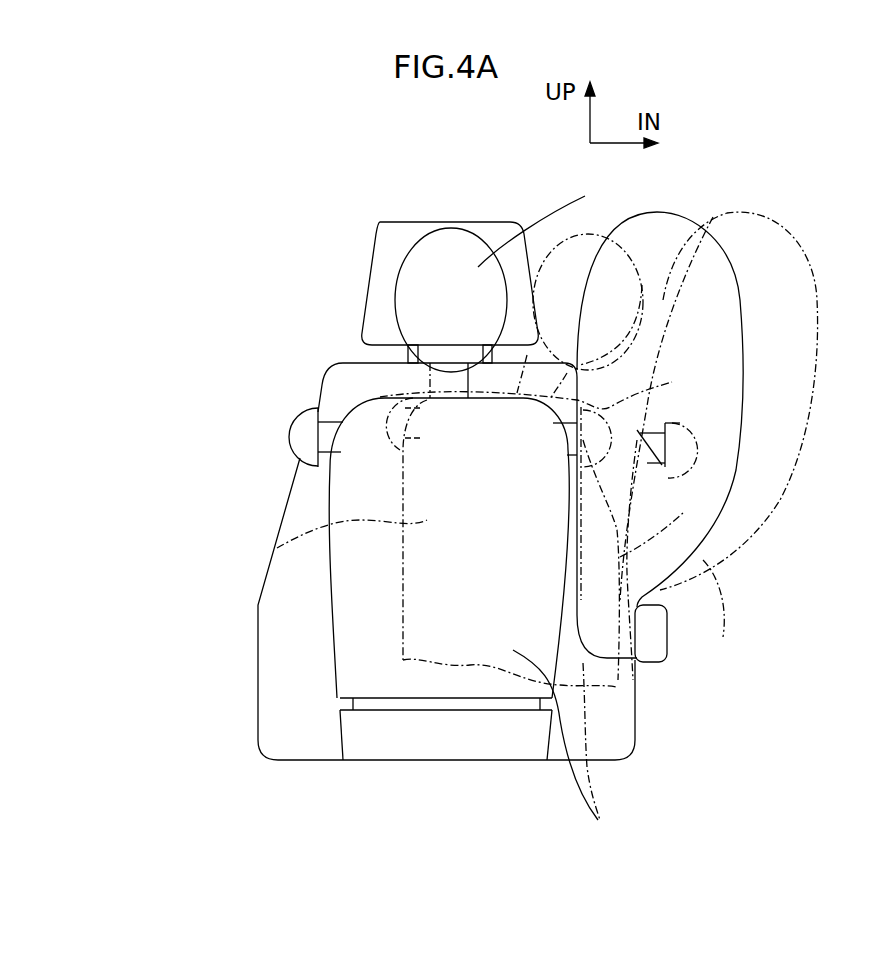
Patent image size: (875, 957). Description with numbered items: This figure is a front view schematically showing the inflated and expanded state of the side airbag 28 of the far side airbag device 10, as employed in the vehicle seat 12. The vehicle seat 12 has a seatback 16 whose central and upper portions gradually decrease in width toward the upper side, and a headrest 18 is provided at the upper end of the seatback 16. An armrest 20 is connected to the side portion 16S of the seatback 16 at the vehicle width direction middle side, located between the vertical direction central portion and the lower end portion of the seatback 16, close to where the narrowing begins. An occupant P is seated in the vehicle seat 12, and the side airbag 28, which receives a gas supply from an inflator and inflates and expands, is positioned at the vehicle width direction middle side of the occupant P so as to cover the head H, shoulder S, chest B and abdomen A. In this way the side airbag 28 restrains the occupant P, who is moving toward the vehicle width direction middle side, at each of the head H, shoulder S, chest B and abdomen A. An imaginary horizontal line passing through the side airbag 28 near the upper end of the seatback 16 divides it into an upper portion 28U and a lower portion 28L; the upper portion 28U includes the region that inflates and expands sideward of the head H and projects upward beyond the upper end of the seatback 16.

The far side airbag device 10 is at (743, 193).
The vehicle seat 12 is at (287, 322).
The seatback 16 is at (300, 748).
The side portion 16S is at (277, 577).
The headrest 18 is at (485, 227).
The armrest 20 is at (653, 650).
The side airbag 28 is at (750, 467).
The upper portion 28U is at (723, 223).
The lower portion 28L is at (657, 560).
The head H is at (563, 270).
The shoulder S is at (598, 412).
The chest B is at (343, 512).
The occupant P is at (392, 613).
The abdomen A is at (564, 747).